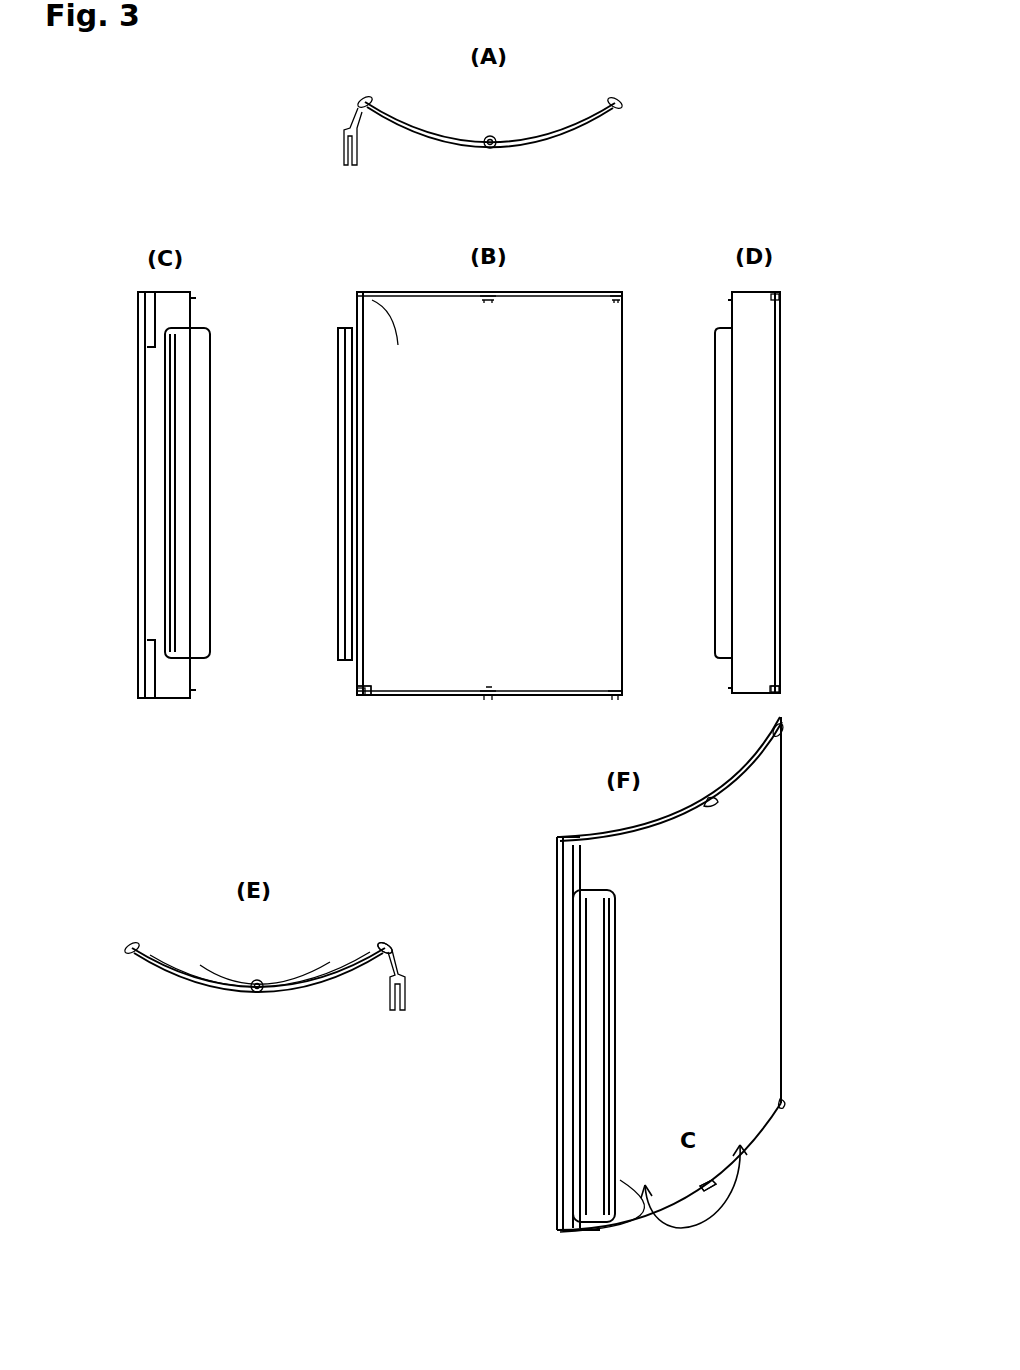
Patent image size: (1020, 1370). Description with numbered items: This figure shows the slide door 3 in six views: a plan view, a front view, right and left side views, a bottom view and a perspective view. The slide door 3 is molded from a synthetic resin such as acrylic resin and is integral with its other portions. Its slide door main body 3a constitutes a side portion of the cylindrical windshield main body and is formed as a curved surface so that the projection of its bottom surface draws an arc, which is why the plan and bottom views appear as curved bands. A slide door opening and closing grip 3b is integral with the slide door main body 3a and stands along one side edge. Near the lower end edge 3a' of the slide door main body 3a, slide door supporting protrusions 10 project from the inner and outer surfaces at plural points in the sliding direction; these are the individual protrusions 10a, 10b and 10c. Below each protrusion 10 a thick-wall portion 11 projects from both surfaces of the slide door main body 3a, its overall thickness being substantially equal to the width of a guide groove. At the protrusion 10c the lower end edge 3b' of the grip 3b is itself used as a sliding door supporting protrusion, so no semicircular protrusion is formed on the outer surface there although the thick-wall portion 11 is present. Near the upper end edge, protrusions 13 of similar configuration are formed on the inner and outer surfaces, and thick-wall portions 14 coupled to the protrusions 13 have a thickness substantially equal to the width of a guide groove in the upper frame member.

The slide door 3 is at (555, 150).
The slide door main body 3a is at (498, 683).
The lower end edge of the slide door main body 3a' is at (426, 999).
The slide door opening and closing grip 3b is at (448, 665).
The lower end edge of the grip 3b' is at (358, 719).
The slide door supporting protrusion 10 is at (382, 945).
The protrusion 10a is at (612, 690).
The protrusion 10b is at (488, 688).
The protrusion 10c is at (382, 945).
The thick-wall portion 11 is at (385, 697).
The protrusion 13 is at (370, 100).
The thick-wall portion 14 is at (486, 294).